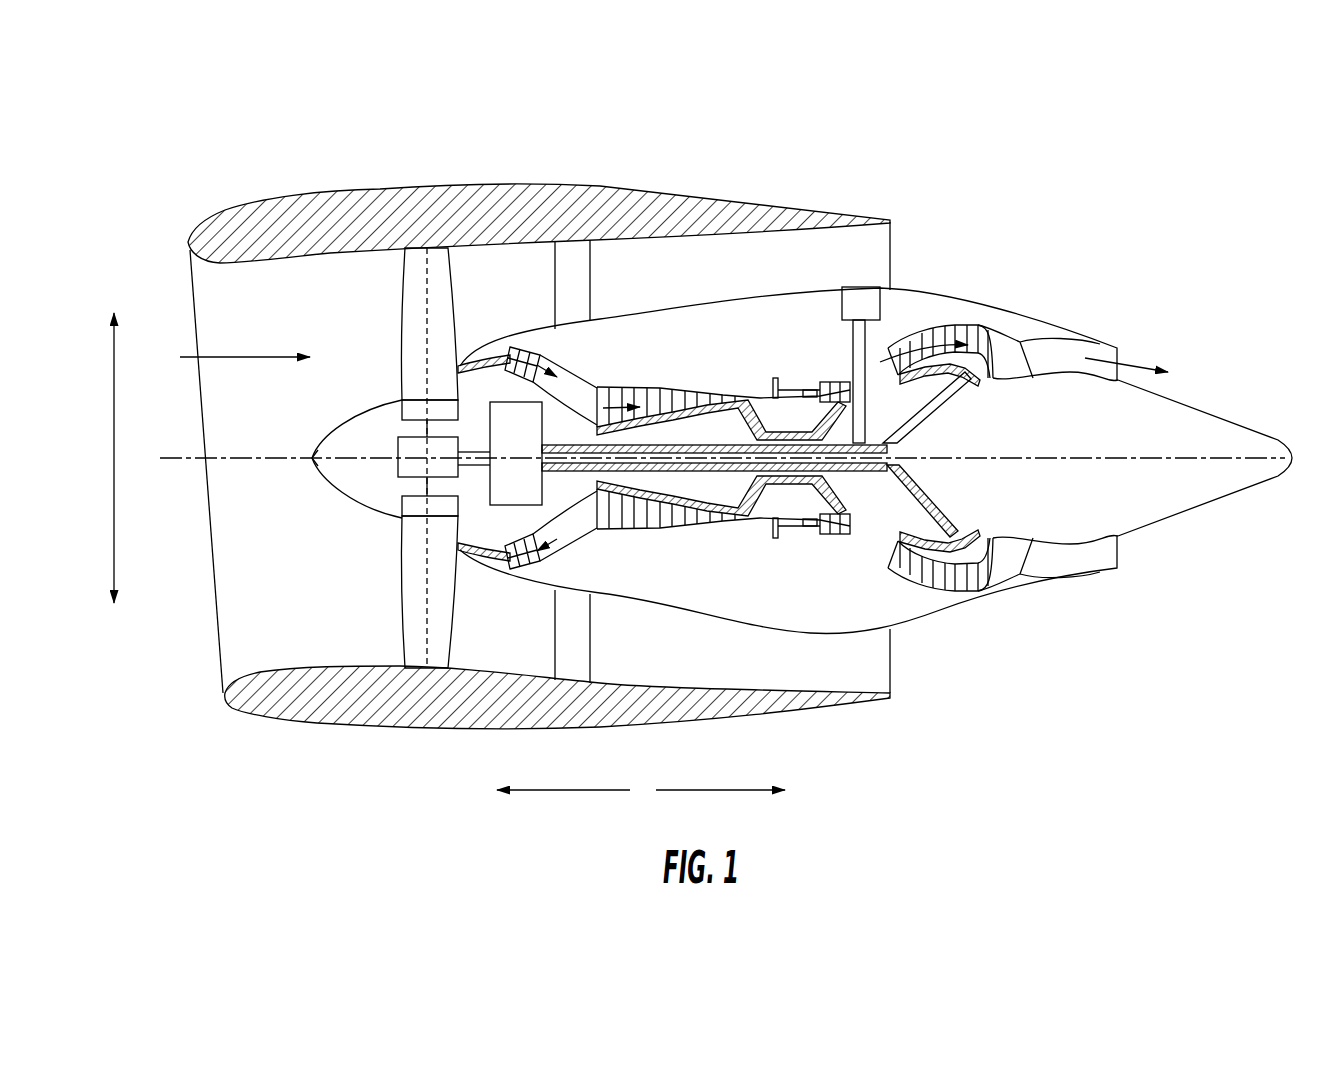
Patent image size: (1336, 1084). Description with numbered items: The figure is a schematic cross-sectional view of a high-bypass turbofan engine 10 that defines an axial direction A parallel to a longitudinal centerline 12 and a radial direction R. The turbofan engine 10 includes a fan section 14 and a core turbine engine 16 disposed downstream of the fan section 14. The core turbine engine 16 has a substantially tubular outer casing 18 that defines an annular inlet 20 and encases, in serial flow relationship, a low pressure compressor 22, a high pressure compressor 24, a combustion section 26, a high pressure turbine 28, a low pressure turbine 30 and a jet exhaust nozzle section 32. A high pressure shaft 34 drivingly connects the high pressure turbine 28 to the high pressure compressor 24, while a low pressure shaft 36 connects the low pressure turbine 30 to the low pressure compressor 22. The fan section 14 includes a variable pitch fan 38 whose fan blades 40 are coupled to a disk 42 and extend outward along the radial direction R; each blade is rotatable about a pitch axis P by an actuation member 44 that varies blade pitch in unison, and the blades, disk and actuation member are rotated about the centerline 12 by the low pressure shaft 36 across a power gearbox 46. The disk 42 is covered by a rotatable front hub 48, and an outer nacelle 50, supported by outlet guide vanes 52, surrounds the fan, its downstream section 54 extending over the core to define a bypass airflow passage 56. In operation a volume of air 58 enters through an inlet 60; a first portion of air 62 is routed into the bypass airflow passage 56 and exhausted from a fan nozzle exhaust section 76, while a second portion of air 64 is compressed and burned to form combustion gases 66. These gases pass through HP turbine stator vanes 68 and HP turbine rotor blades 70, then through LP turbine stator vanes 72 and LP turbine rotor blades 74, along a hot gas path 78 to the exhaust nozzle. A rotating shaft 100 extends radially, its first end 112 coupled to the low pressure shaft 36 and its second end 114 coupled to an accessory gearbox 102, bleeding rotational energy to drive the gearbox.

The turbofan engine 10 is at (1037, 202).
The longitudinal centerline 12 is at (1060, 460).
The fan section 14 is at (361, 272).
The core turbine engine 16 is at (712, 343).
The outer casing 18 is at (750, 623).
The annular inlet 20 is at (497, 563).
The low pressure compressor 22 is at (550, 520).
The high pressure compressor 24 is at (620, 518).
The combustion section 26 is at (793, 520).
The high pressure turbine 28 is at (907, 520).
The low pressure turbine 30 is at (975, 580).
The jet exhaust nozzle section 32 is at (1035, 565).
The high pressure shaft 34 is at (797, 428).
The low pressure shaft 36 is at (900, 428).
The variable pitch fan 38 is at (367, 513).
The fan blades 40 is at (400, 607).
The disk 42 is at (417, 410).
The actuation member 44 is at (417, 422).
The power gearbox 46 is at (550, 420).
The front hub 48 is at (320, 468).
The outer nacelle 50 is at (445, 735).
The outlet guide vanes 52 is at (593, 267).
The downstream section 54 is at (840, 220).
The bypass airflow passage 56 is at (765, 277).
The volume of air 58 is at (237, 357).
The inlet 60 is at (222, 668).
The first portion of air 62 is at (497, 277).
The second portion of air 64 is at (490, 343).
The combustion gases 66 is at (868, 377).
The HP turbine stator vanes 68 is at (803, 520).
The HP turbine rotor blades 70 is at (883, 493).
The LP turbine stator vanes 72 is at (900, 567).
The LP turbine rotor blades 74 is at (910, 572).
The fan nozzle exhaust section 76 is at (885, 245).
The hot gas path 78 is at (877, 362).
The rotating shaft 100 is at (870, 398).
The accessory gearbox 102 is at (840, 303).
The first end 112 is at (873, 455).
The second end 114 is at (877, 323).
The pitch axis P is at (427, 263).
The radial direction R is at (114, 458).
The axial direction A is at (641, 790).